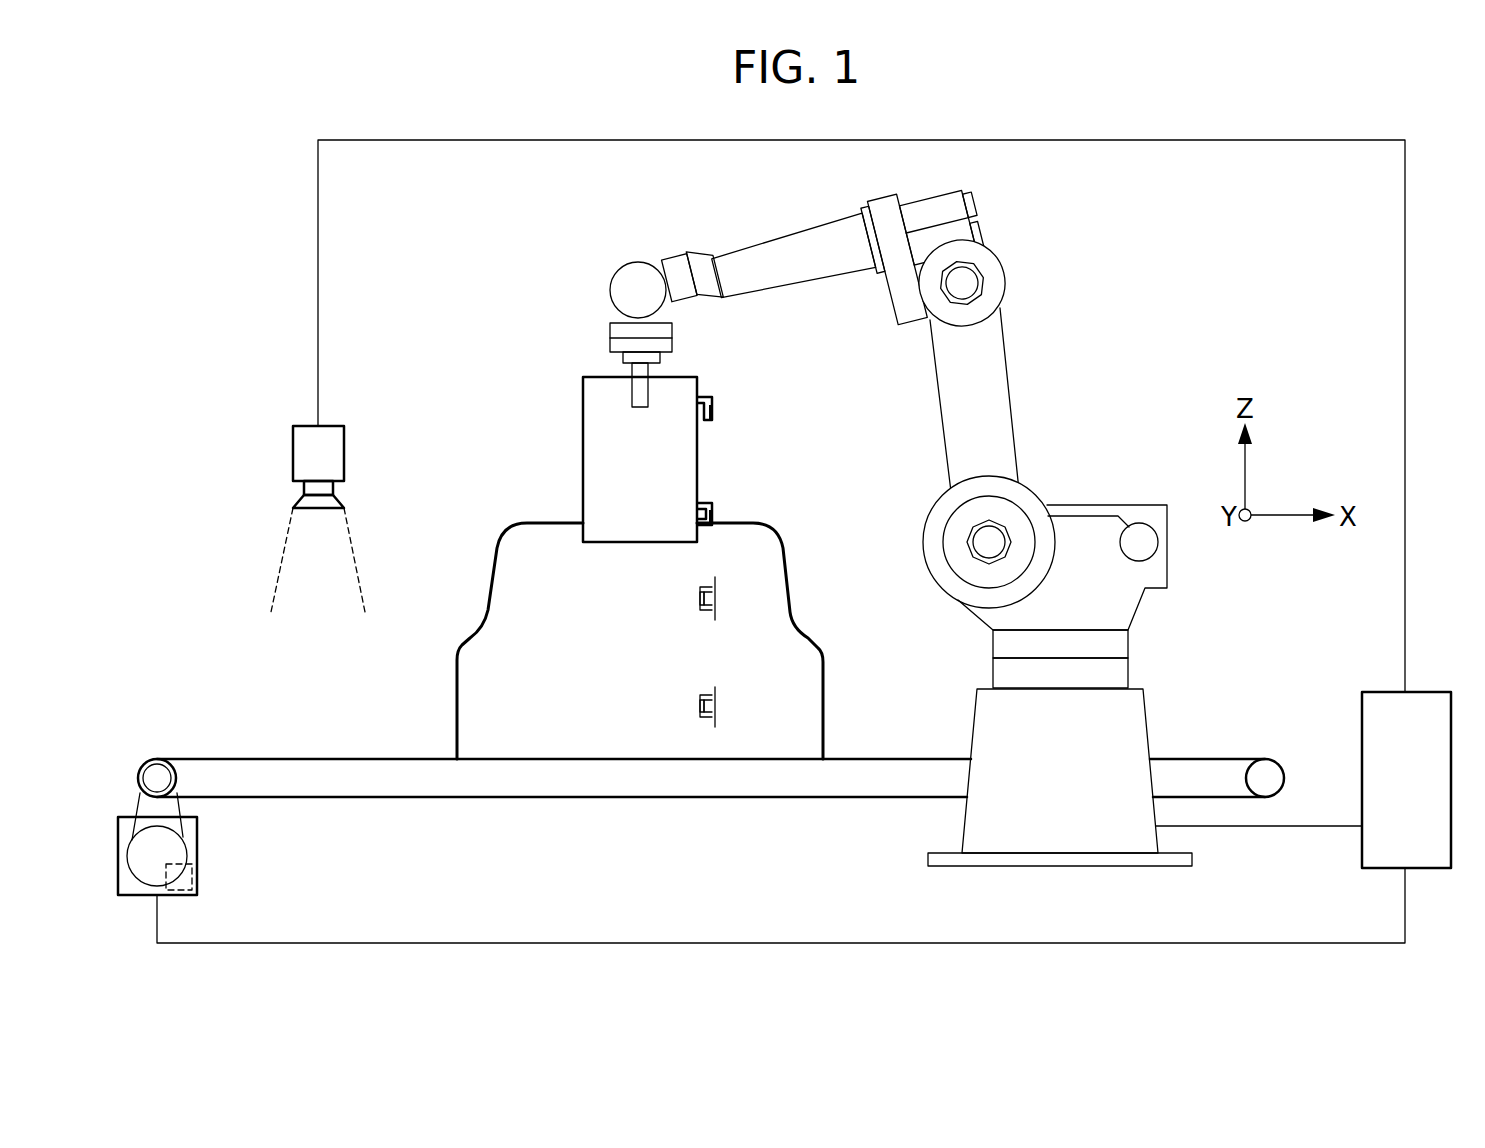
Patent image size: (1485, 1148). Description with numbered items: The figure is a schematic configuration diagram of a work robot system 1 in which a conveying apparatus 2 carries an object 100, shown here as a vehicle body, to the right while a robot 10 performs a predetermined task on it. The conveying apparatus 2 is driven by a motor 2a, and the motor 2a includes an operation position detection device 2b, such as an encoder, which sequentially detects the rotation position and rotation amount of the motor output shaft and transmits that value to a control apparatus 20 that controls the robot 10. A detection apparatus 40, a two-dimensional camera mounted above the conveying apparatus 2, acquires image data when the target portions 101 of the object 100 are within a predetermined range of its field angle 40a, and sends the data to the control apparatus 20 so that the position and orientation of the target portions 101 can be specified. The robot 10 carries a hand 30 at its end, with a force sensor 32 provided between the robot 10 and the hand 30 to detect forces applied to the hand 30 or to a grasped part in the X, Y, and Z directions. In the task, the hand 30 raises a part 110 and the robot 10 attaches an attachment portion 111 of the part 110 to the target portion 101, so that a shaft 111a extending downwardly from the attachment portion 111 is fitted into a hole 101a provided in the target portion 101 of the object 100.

The work robot system 1 is at (222, 178).
The conveying apparatus 2 is at (235, 757).
The motor 2a is at (197, 833).
The operation position detection device 2b is at (192, 877).
The robot 10 is at (1062, 337).
The control apparatus 20 is at (1375, 698).
The hand 30 is at (613, 356).
The force sensor 32 is at (609, 341).
The detection apparatus 40 is at (293, 442).
The field angle 40a is at (287, 540).
The object 100 is at (484, 626).
The target portion 101 is at (718, 595).
The hole 101a is at (697, 598).
The part 110 is at (583, 457).
The attachment portion 111 is at (700, 395).
The shaft 111a is at (713, 411).